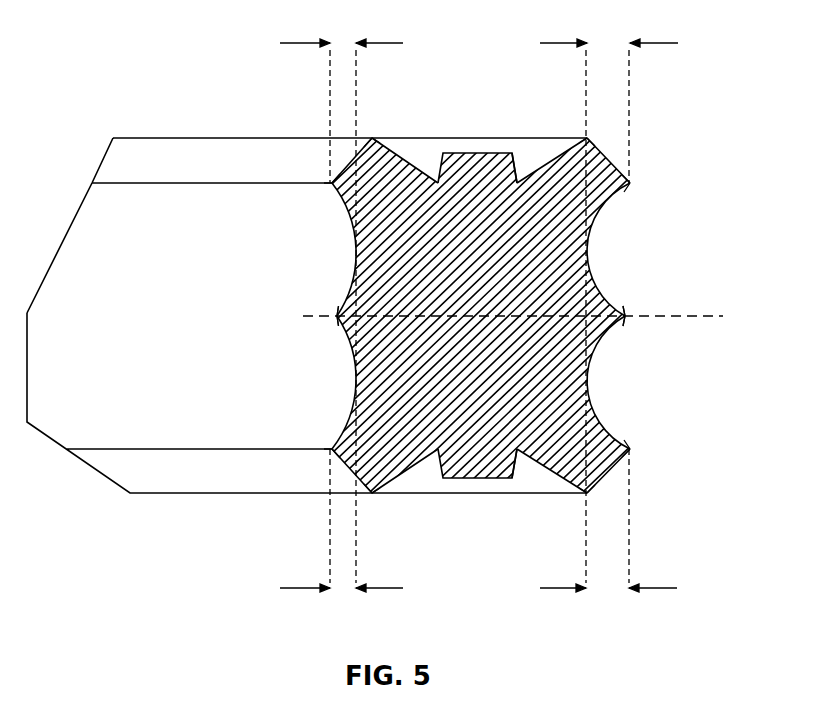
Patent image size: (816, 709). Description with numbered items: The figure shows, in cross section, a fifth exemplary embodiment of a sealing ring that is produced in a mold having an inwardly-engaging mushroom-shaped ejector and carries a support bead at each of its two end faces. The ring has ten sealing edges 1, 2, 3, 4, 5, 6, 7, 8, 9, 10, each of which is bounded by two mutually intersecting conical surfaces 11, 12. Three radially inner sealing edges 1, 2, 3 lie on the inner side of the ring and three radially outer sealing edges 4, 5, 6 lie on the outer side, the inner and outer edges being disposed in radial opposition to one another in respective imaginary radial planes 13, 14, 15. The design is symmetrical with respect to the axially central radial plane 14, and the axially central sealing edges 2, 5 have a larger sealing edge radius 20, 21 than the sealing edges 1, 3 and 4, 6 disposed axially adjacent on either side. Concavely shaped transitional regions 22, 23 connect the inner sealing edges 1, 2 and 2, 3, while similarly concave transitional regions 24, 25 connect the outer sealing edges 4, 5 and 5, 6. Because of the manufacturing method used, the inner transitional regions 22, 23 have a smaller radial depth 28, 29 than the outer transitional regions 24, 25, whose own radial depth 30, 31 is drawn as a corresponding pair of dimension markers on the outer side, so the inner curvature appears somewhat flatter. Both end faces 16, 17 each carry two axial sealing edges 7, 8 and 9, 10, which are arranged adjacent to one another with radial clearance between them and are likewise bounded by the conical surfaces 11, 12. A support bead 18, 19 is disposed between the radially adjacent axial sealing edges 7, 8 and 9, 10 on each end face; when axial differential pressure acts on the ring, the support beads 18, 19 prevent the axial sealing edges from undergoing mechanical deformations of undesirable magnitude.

The radially inner sealing edge 1 is at (333, 183).
The axially central radially inner sealing edge 2 is at (337, 315).
The radially inner sealing edge 3 is at (331, 451).
The radially outer sealing edge 4 is at (630, 183).
The axially central radially outer sealing edge 5 is at (626, 316).
The radially outer sealing edge 6 is at (631, 452).
The inner axial sealing edge 7 is at (372, 138).
The outer axial sealing edge 8 is at (587, 138).
The inner axial sealing edge 9 is at (371, 493).
The outer axial sealing edge 10 is at (586, 493).
The conical surface 11 is at (352, 160).
The conical surface 12 is at (405, 160).
The imaginary radial plane 13 is at (202, 183).
The axially central radial plane 14 is at (697, 315).
The imaginary radial plane 15 is at (221, 450).
The end face 16 is at (519, 153).
The end face 17 is at (532, 472).
The support bead 18 is at (480, 153).
The support bead 19 is at (477, 480).
The sealing edge radius 20 is at (338, 317).
The sealing edge radius 21 is at (627, 317).
The concave transitional region 22 is at (357, 250).
The concave transitional region 23 is at (357, 378).
The concave transitional region 24 is at (588, 250).
The concave transitional region 25 is at (588, 385).
The radial depth 28 is at (342, 42).
The radial depth 29 is at (342, 589).
The right upper depth dimension 30 is at (608, 42).
The right lower depth dimension 31 is at (607, 591).